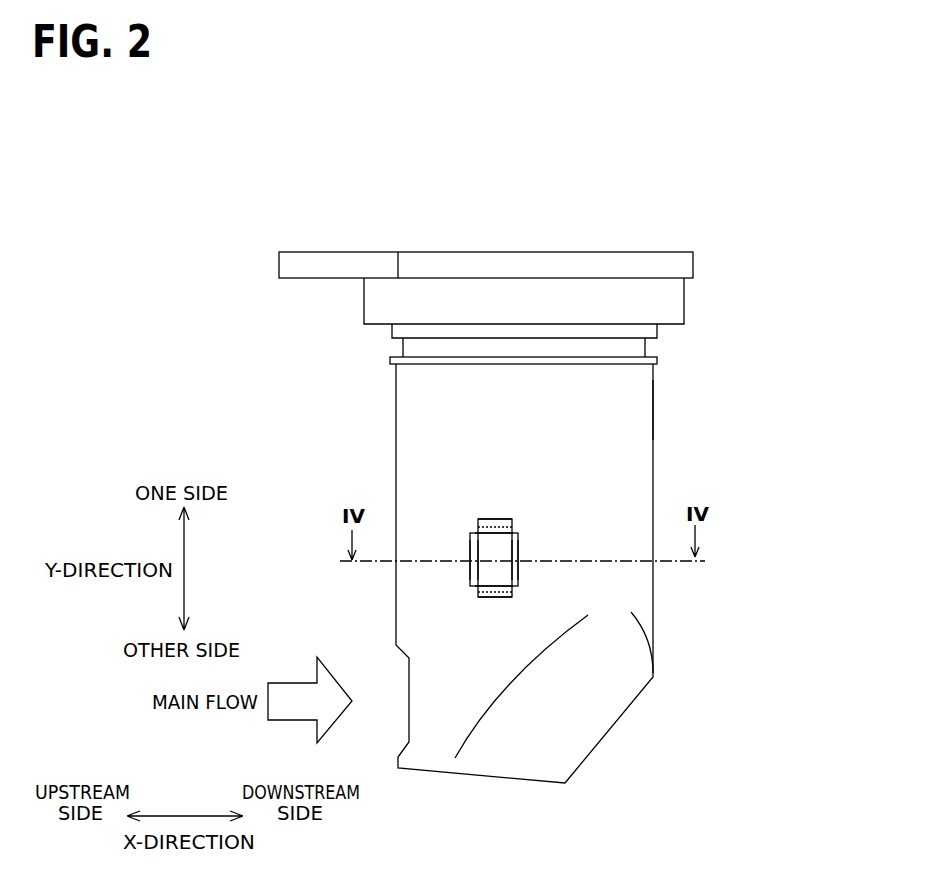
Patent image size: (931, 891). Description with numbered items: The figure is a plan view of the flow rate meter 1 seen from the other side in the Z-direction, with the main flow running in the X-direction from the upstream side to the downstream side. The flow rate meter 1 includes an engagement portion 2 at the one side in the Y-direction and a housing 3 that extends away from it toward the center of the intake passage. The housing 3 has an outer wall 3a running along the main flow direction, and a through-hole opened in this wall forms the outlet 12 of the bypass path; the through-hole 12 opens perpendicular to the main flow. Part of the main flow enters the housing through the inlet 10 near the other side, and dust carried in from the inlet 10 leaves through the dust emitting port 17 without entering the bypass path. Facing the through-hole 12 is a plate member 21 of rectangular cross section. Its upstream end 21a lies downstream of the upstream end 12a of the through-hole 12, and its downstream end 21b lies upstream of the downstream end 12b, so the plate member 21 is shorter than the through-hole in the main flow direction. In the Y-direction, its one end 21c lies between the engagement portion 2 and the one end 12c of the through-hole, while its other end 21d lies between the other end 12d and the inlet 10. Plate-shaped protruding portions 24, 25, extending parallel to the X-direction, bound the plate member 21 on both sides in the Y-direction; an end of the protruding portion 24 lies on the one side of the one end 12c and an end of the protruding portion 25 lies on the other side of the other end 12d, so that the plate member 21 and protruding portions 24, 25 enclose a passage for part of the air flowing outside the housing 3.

The flow rate meter 1 is at (762, 243).
The engagement portion 2 is at (645, 350).
The housing 3 is at (653, 460).
The outer wall 3a is at (643, 414).
The inlet 10 is at (395, 698).
The outlet (through-hole) 12 is at (518, 572).
The upstream end of the through-hole 12a is at (470, 582).
The downstream end of the through-hole 12b is at (518, 583).
The one end of the through-hole 12c is at (498, 535).
The other end of the through-hole 12d is at (508, 597).
The dust emitting port 17 is at (610, 728).
The plate member 21 is at (472, 528).
The upstream end of the plate member 21a is at (470, 567).
The downstream end of the plate member 21b is at (518, 546).
The one end of the plate member 21c is at (492, 518).
The other end of the plate member 21d is at (487, 597).
The protruding portion 24 is at (477, 517).
The protruding portion 25 is at (478, 597).